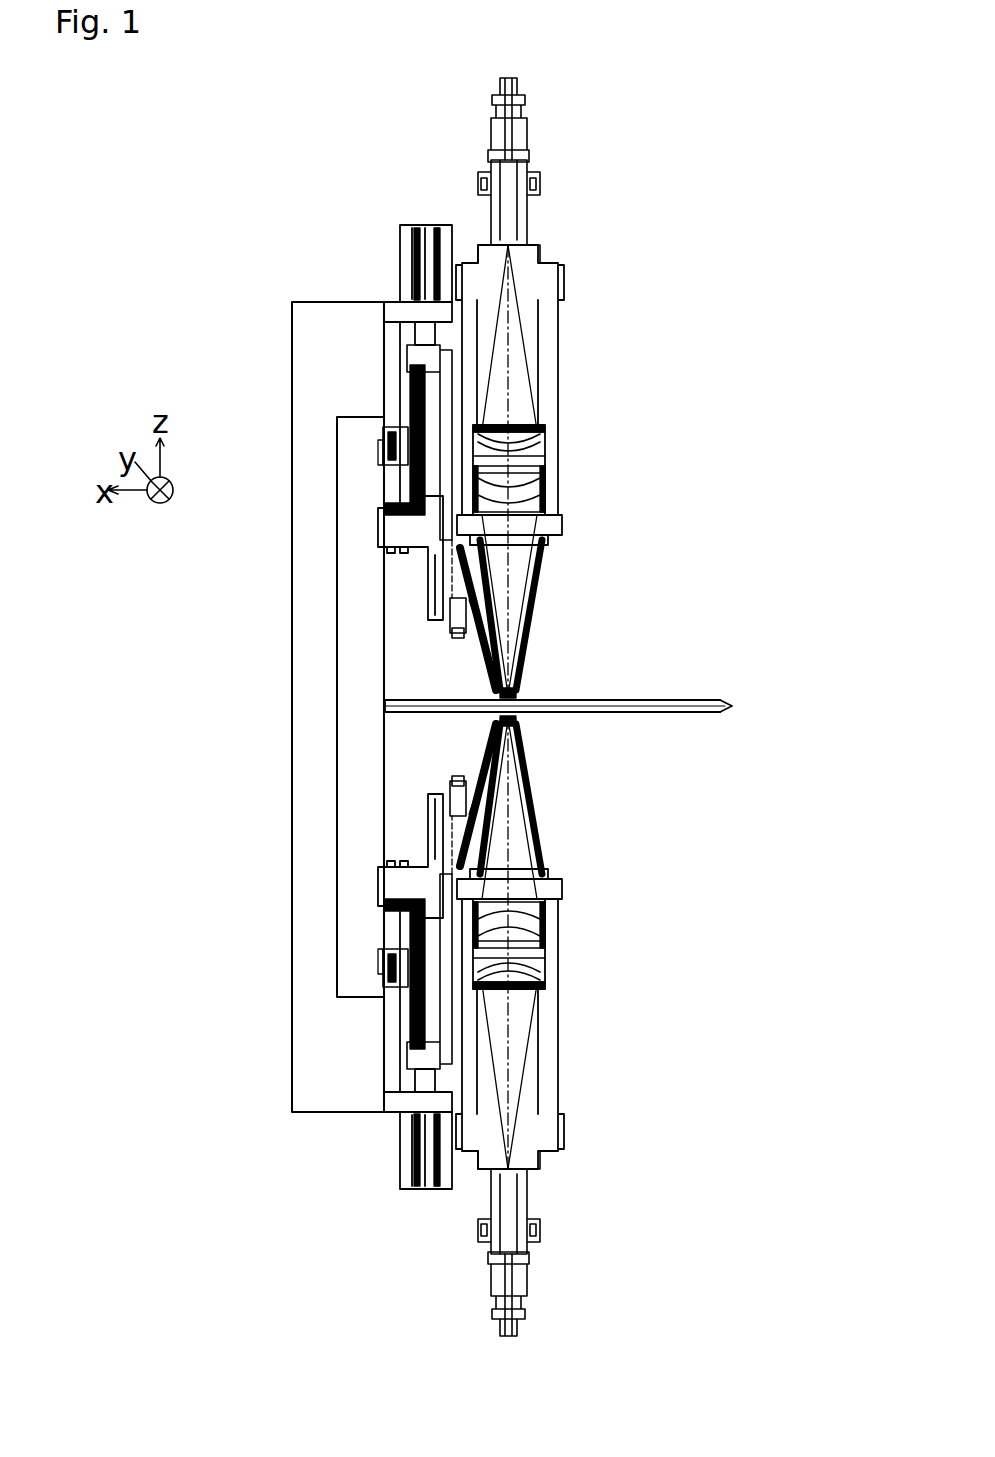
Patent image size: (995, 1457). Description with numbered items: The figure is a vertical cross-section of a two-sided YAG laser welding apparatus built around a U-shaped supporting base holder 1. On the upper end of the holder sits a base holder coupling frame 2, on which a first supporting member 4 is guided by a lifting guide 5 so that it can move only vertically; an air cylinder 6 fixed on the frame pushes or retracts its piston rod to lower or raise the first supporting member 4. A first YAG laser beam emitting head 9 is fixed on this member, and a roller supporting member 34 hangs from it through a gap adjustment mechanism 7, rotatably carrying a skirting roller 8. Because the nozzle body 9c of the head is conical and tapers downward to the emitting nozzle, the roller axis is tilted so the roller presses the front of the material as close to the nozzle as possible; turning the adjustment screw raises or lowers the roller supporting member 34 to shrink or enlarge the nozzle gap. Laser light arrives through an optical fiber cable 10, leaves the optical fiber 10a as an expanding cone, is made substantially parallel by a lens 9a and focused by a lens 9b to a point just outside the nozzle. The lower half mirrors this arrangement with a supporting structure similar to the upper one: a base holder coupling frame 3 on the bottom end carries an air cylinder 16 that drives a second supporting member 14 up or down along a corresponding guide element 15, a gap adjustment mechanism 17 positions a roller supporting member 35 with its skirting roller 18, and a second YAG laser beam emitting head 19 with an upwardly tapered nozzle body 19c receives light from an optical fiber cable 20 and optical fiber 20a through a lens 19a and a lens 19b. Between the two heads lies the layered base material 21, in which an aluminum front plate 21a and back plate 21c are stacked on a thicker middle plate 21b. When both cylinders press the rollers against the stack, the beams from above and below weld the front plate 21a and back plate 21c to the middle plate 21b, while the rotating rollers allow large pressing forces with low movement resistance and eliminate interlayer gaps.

The supporting base holder 1 is at (293, 560).
The base holder coupling frame 2 is at (400, 310).
The base holder coupling frame 3 is at (402, 1103).
The first supporting member 4 is at (417, 357).
The lifting guide 5 is at (396, 420).
The air cylinder 6 is at (427, 253).
The gap adjustment mechanism 7 is at (428, 590).
The skirting roller 8 is at (462, 670).
The first YAG laser beam emitting head 9 is at (563, 373).
The lens 9a is at (520, 437).
The lens 9b is at (537, 498).
The nozzle body 9c is at (528, 640).
The optical fiber cable 10 is at (522, 84).
The optical fiber 10a is at (520, 212).
The second supporting member 14 is at (398, 1063).
The lower adjusting screw 15 is at (395, 990).
The air cylinder 16 is at (407, 1168).
The gap adjustment mechanism 17 is at (425, 818).
The skirting roller 18 is at (483, 733).
The second YAG laser beam emitting head 19 is at (565, 1042).
The lens 19a is at (542, 982).
The lens 19b is at (545, 910).
The nozzle body 19c is at (528, 760).
The optical fiber cable 20 is at (524, 1328).
The optical fiber 20a is at (510, 1227).
The layered base material 21 is at (607, 697).
The front plate 21a is at (657, 698).
The middle plate 21b is at (690, 697).
The back plate 21c is at (658, 713).
The roller supporting member 34 is at (465, 642).
The roller supporting member 35 is at (467, 758).